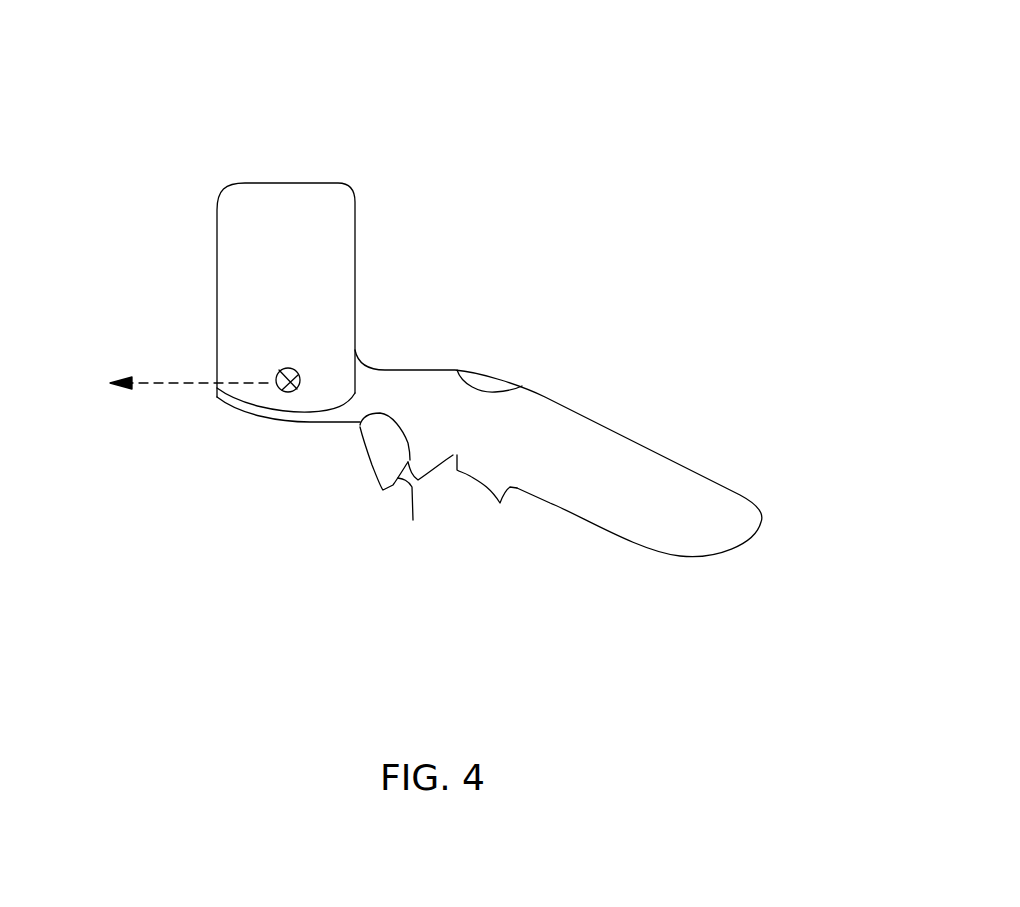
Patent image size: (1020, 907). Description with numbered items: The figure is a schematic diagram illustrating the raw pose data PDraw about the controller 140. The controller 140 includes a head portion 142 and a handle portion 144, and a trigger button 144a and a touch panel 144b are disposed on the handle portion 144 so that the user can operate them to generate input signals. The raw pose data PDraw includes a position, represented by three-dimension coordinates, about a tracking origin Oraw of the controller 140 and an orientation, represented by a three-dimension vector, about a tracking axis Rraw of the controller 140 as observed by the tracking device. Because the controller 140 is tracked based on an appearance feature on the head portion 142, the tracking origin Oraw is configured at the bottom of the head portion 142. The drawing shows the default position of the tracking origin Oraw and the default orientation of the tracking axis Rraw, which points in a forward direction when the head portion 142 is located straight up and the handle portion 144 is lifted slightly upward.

The controller 140 is at (587, 100).
The head portion 142 is at (217, 400).
The handle portion 144 is at (558, 453).
The trigger button 144a is at (420, 482).
The touch panel 144b is at (495, 376).
The tracking axis Rraw is at (183, 383).
The tracking origin Oraw is at (299, 393).
The raw pose data PDraw is at (257, 487).